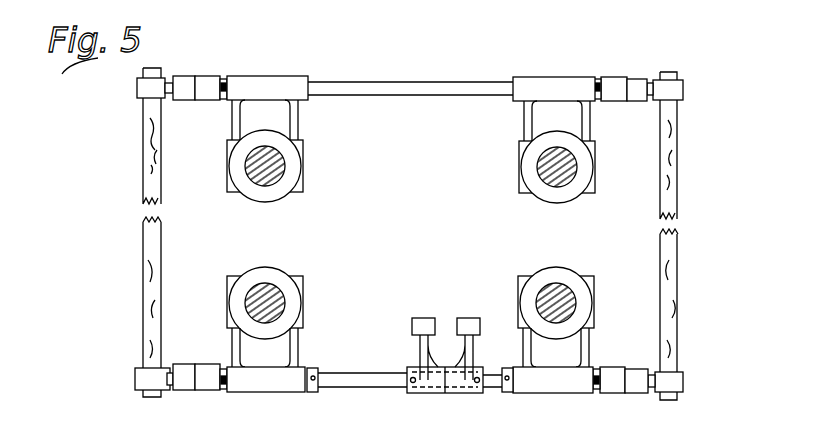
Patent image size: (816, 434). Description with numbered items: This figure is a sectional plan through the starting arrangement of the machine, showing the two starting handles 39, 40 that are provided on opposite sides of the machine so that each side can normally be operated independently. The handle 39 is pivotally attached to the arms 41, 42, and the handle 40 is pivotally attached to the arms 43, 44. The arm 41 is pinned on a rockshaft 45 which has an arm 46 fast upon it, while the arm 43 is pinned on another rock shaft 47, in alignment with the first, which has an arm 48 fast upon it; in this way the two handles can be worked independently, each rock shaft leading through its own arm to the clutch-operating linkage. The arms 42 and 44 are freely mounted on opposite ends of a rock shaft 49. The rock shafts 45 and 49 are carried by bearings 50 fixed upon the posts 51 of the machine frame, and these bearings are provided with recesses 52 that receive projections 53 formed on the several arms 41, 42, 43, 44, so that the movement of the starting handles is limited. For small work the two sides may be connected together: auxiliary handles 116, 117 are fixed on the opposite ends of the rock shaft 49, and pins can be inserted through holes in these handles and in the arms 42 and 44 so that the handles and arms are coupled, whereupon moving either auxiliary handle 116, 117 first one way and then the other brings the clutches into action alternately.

The starting handle 39 is at (150, 143).
The starting handle 40 is at (668, 167).
The arm 41 is at (205, 372).
The arm 42 is at (205, 82).
The arm 43 is at (613, 373).
The arm 44 is at (613, 83).
The rockshaft 45 is at (358, 377).
The arm 46 is at (417, 328).
The rock shaft 47 is at (492, 387).
The arm 48 is at (467, 323).
The rock shaft 49 is at (420, 90).
The bearing 50 is at (267, 87).
The post 51 is at (275, 168).
The recess 52 is at (226, 80).
The projection 53 is at (222, 88).
The auxiliary handle 116 is at (142, 88).
The auxiliary handle 117 is at (682, 92).